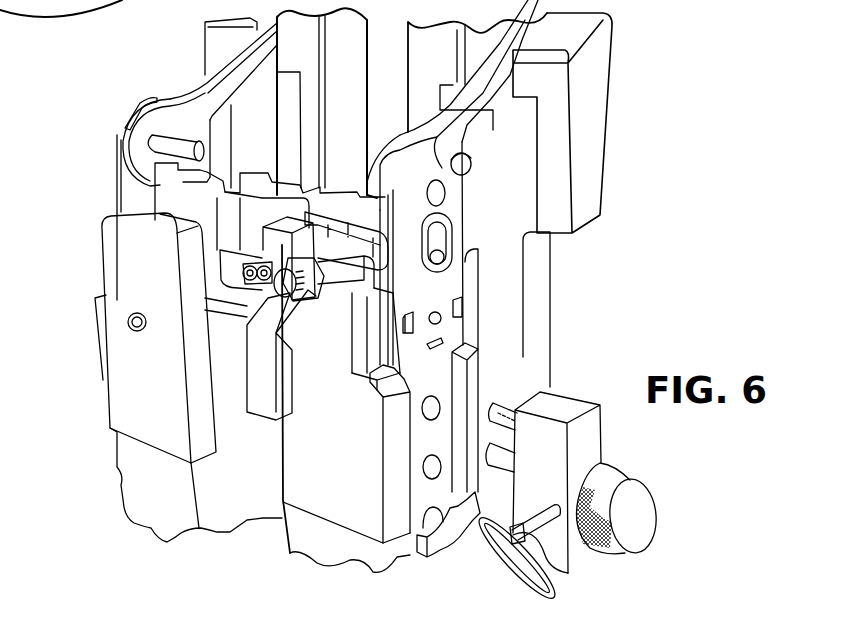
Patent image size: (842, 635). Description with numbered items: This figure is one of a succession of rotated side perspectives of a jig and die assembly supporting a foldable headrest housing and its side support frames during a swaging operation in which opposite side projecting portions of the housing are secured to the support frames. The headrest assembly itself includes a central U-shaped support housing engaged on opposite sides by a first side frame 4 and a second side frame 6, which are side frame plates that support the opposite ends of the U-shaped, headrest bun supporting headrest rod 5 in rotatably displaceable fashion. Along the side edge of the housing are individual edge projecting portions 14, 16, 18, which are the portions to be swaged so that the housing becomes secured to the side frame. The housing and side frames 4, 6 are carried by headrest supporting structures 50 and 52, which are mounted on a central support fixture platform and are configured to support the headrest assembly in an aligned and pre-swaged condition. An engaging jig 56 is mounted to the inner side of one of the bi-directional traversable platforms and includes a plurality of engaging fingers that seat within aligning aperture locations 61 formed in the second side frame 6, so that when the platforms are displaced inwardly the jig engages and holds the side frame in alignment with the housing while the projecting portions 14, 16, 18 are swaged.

The first side frame 4 is at (115, 185).
The headrest rod 5 is at (203, 88).
The second side frame 6 is at (415, 178).
The edge projecting portion 14 is at (413, 317).
The edge projecting portion 16 is at (464, 303).
The edge projecting portion 18 is at (441, 340).
The headrest supporting structure 50 is at (105, 395).
The headrest supporting structure 52 is at (337, 510).
The engaging jig 56 is at (560, 550).
The aligning aperture locations 61 is at (423, 470).